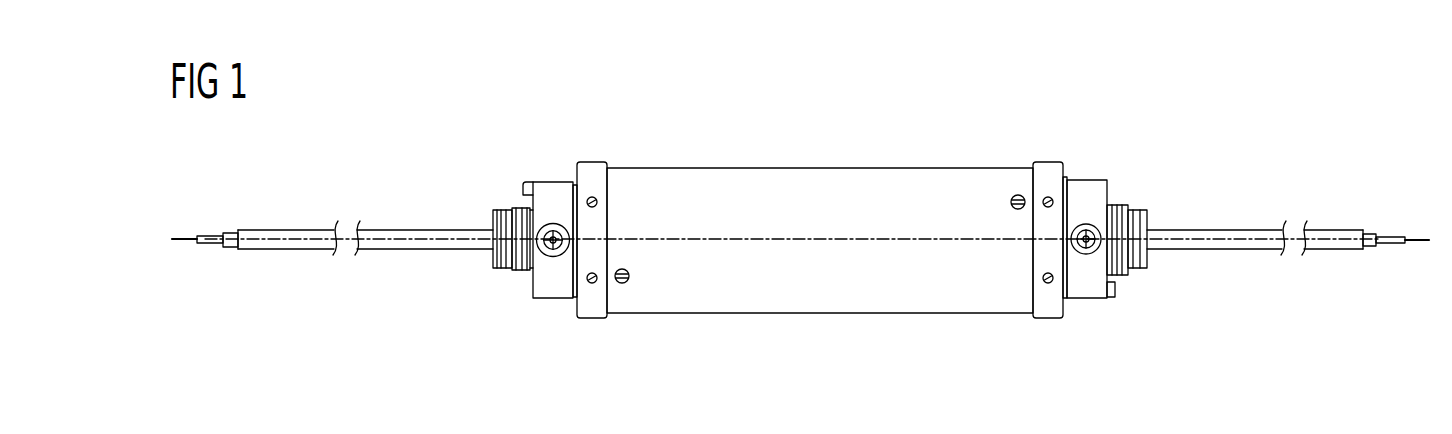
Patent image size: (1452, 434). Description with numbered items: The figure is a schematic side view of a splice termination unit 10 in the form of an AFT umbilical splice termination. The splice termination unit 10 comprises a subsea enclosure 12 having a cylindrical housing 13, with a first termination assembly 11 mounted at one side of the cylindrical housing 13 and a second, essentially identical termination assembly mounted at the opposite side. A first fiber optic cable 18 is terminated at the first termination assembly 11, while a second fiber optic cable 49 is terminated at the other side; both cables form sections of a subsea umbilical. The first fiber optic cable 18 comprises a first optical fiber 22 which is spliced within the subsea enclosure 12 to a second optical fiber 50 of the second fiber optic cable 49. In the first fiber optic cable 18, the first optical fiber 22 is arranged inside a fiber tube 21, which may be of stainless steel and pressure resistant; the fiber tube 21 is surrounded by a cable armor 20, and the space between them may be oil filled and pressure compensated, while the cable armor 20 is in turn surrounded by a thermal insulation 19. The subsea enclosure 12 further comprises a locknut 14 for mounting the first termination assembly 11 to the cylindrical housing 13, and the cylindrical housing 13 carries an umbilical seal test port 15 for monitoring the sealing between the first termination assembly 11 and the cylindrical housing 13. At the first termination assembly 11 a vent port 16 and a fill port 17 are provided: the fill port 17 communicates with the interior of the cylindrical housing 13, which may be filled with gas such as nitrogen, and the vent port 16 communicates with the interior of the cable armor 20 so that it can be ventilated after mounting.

The splice termination unit 10 is at (968, 120).
The first termination assembly 11 is at (1093, 178).
The subsea enclosure 12 is at (695, 133).
The cylindrical housing 13 is at (640, 167).
The locknut 14 is at (1047, 160).
The umbilical seal test port 15 is at (1010, 203).
The vent port 16 is at (1076, 229).
The fill port 17 is at (1118, 291).
The first fiber optic cable 18 is at (1224, 278).
The thermal insulation 19 is at (1321, 230).
The cable armor 20 is at (1371, 233).
The fiber tube 21 is at (1387, 247).
The first optical fiber 22 is at (1422, 245).
The second fiber optic cable 49 is at (411, 212).
The second optical fiber 50 is at (192, 243).